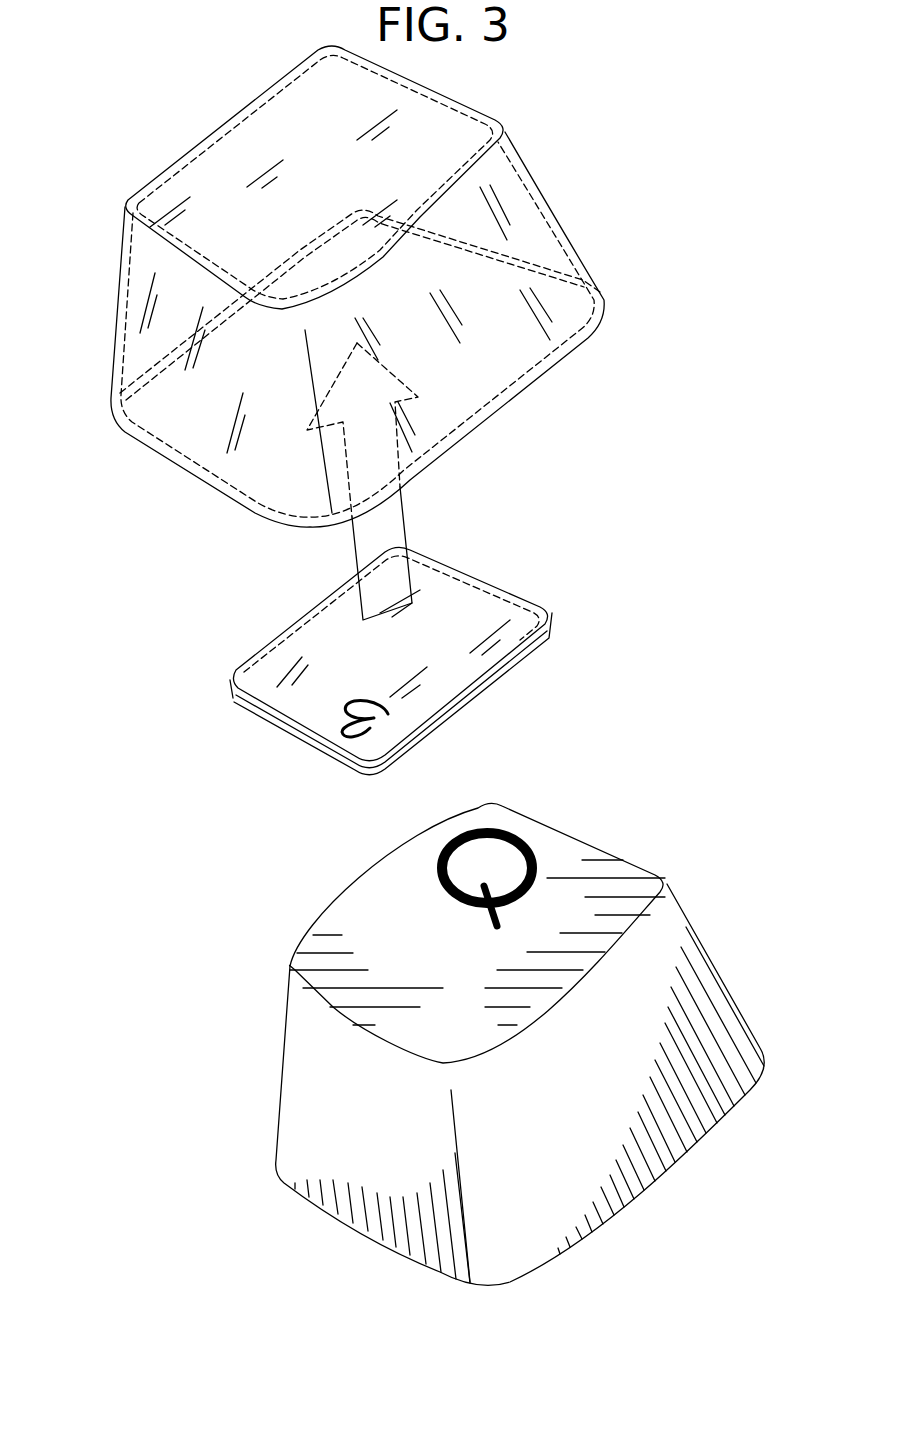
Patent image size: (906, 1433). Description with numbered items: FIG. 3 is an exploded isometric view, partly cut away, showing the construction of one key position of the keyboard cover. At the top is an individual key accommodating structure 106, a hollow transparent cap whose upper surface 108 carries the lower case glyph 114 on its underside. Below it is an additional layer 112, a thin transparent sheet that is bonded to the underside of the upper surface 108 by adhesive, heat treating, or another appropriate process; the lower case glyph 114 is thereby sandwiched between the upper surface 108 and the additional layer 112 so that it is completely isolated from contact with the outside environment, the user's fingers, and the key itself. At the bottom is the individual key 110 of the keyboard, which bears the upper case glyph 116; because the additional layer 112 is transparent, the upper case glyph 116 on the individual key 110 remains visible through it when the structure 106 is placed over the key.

The individual key accommodating structure 106 is at (117, 292).
The upper surface 108 is at (255, 128).
The individual key 110 is at (637, 990).
The additional layer 112 is at (470, 603).
The lower case glyph 114 is at (381, 716).
The upper case glyph 116 is at (517, 836).